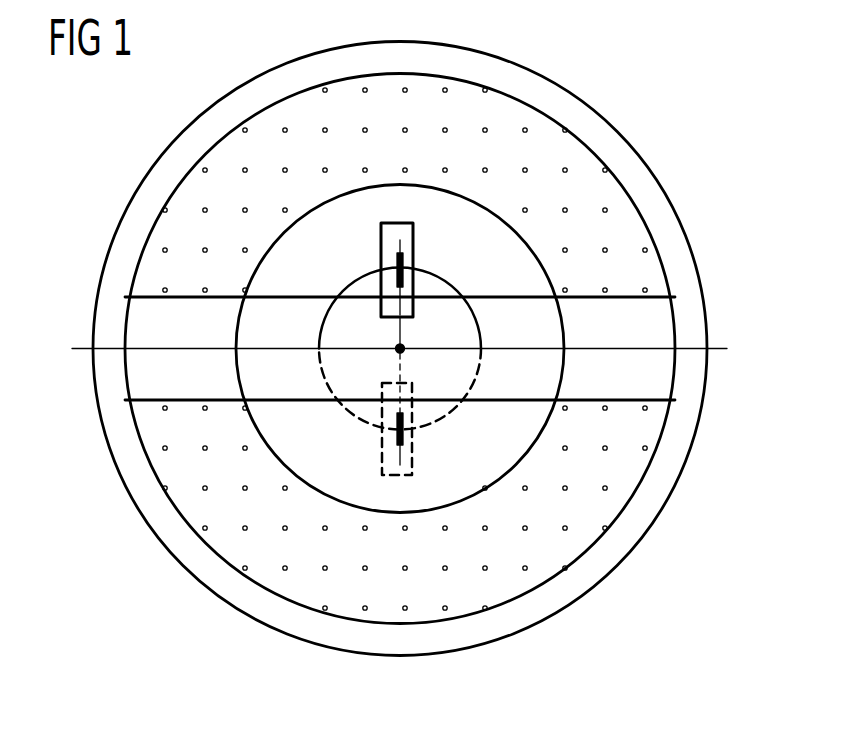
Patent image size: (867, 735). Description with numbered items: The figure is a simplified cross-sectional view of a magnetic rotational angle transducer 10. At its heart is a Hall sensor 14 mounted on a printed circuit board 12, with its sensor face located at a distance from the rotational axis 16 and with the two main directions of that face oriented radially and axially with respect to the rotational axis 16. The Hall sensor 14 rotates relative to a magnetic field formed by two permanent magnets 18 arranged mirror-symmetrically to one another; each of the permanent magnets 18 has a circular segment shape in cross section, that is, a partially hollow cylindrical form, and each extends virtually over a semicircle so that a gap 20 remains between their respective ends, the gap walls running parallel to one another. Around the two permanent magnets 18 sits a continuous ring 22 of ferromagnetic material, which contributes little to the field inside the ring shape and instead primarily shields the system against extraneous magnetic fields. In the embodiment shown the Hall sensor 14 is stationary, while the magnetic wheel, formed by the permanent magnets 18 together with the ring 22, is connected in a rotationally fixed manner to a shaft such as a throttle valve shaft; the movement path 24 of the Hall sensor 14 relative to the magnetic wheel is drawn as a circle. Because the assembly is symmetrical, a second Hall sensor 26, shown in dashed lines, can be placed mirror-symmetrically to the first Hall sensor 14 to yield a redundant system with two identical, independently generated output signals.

The magnetic rotational angle transducer 10 is at (639, 120).
The printed circuit board 12 is at (395, 222).
The Hall sensor 14 is at (405, 262).
The rotational axis 16 is at (405, 351).
The permanent magnets 18 is at (630, 228).
The gap 20 is at (658, 373).
The continuous ring 22 is at (662, 467).
The movement path 24 is at (462, 289).
The second Hall sensor 26 is at (406, 435).